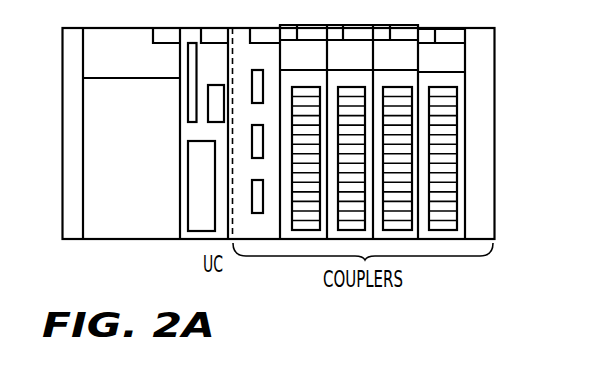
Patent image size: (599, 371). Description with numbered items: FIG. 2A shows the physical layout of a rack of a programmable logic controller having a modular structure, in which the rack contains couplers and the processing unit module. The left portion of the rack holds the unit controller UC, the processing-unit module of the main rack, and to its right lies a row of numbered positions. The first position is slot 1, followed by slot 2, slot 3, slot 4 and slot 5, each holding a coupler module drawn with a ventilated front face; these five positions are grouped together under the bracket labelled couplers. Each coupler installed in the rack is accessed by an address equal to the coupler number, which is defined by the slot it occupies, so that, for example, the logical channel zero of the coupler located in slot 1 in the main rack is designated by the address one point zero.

The slot 1 is at (265, 119).
The slot 2 is at (303, 119).
The slot 3 is at (350, 119).
The slot 4 is at (395, 119).
The slot 5 is at (441, 119).